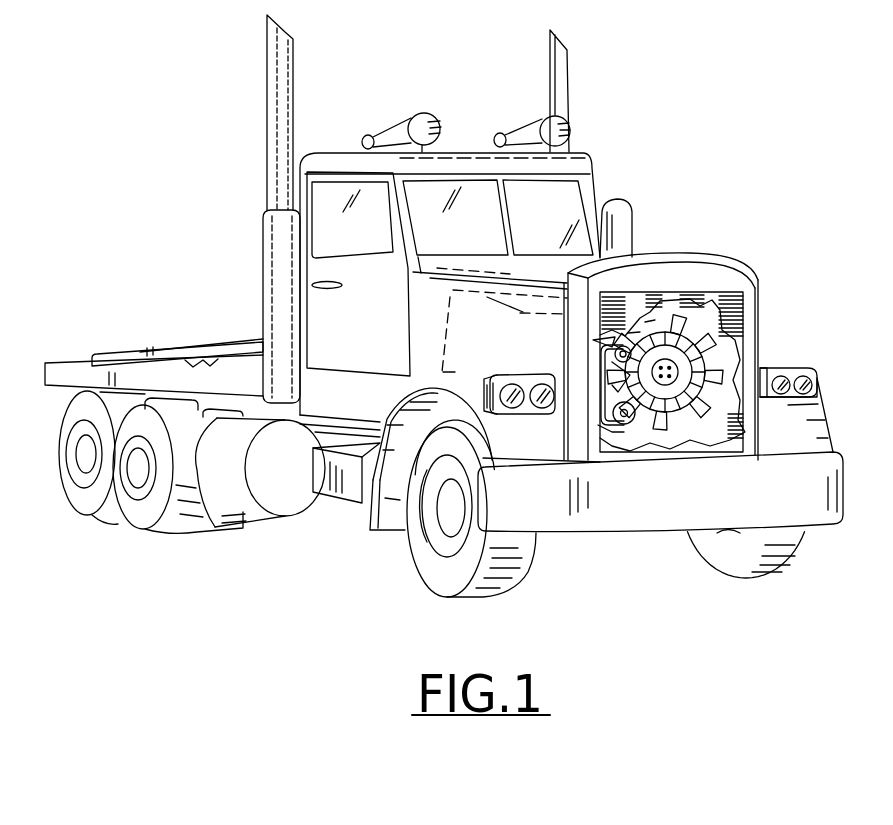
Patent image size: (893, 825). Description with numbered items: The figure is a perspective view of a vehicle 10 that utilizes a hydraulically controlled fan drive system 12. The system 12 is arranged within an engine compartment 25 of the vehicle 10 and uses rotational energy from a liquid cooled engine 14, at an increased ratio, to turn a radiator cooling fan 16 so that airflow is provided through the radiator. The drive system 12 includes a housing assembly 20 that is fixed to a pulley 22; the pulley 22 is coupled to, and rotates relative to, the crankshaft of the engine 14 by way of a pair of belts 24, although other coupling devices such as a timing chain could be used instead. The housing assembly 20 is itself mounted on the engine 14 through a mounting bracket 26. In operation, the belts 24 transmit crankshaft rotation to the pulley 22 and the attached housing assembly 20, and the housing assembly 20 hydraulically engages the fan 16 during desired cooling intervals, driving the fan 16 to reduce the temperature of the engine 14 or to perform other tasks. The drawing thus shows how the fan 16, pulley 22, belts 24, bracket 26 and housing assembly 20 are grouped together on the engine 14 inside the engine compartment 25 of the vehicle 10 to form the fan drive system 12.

The vehicle 10 is at (462, 147).
The hydraulically controlled fan drive system 12 is at (641, 303).
The liquid cooled engine 14 is at (518, 310).
The radiator cooling fan 16 is at (706, 355).
The housing assembly 20 is at (600, 418).
The pulley 22 is at (597, 340).
The belts 24 is at (614, 428).
The engine compartment 25 is at (468, 303).
The mounting bracket 26 is at (597, 367).